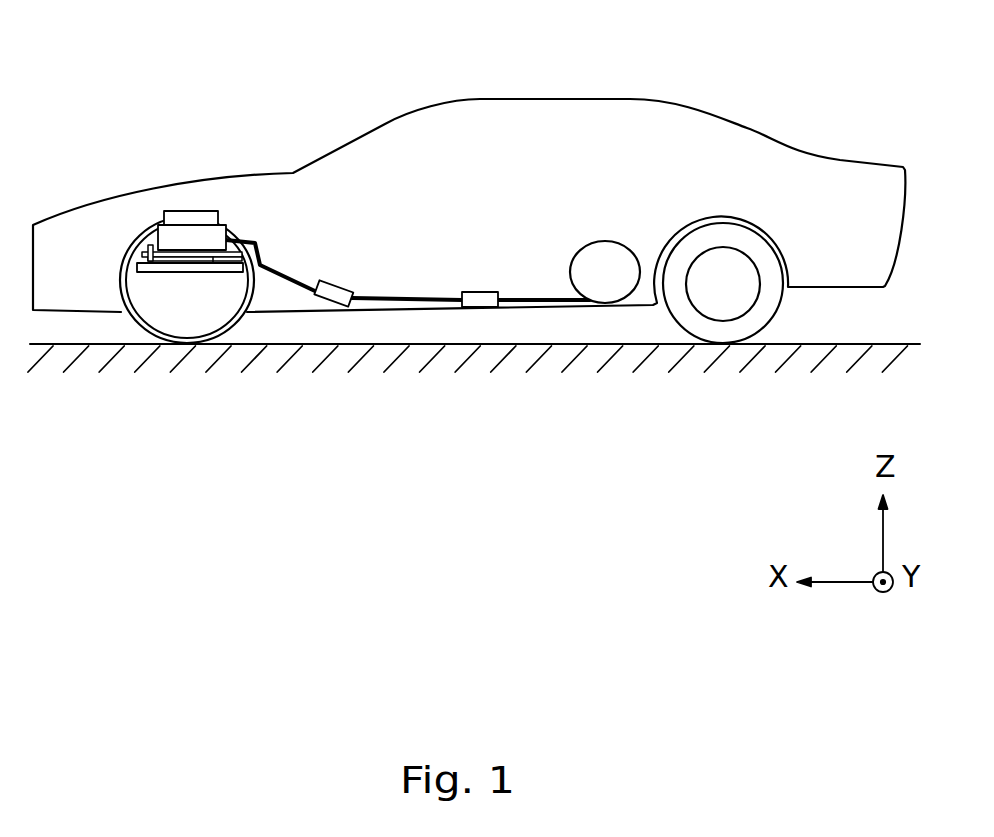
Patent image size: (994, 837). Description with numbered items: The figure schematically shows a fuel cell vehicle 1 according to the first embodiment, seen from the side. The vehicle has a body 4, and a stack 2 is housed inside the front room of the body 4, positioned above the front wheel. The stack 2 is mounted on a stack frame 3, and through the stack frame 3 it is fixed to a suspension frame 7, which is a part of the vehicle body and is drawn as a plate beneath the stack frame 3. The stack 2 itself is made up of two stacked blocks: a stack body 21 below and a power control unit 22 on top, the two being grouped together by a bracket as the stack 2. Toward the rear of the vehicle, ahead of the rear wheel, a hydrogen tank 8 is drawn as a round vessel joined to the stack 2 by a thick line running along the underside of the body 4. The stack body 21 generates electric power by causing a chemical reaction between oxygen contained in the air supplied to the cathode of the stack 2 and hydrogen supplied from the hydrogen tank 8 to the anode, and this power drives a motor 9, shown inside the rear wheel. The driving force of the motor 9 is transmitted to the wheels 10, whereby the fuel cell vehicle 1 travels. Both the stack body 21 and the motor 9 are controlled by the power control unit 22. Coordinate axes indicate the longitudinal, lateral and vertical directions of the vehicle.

The fuel cell vehicle 1 is at (674, 31).
The stack 2 is at (300, 182).
The stack body 21 is at (224, 232).
The power control unit 22 is at (218, 217).
The stack frame 3 is at (148, 252).
The body 4 is at (147, 187).
The suspension frame 7 is at (137, 265).
The hydrogen tank 8 is at (612, 248).
The motor 9 is at (735, 312).
The wheels 10 is at (772, 305).